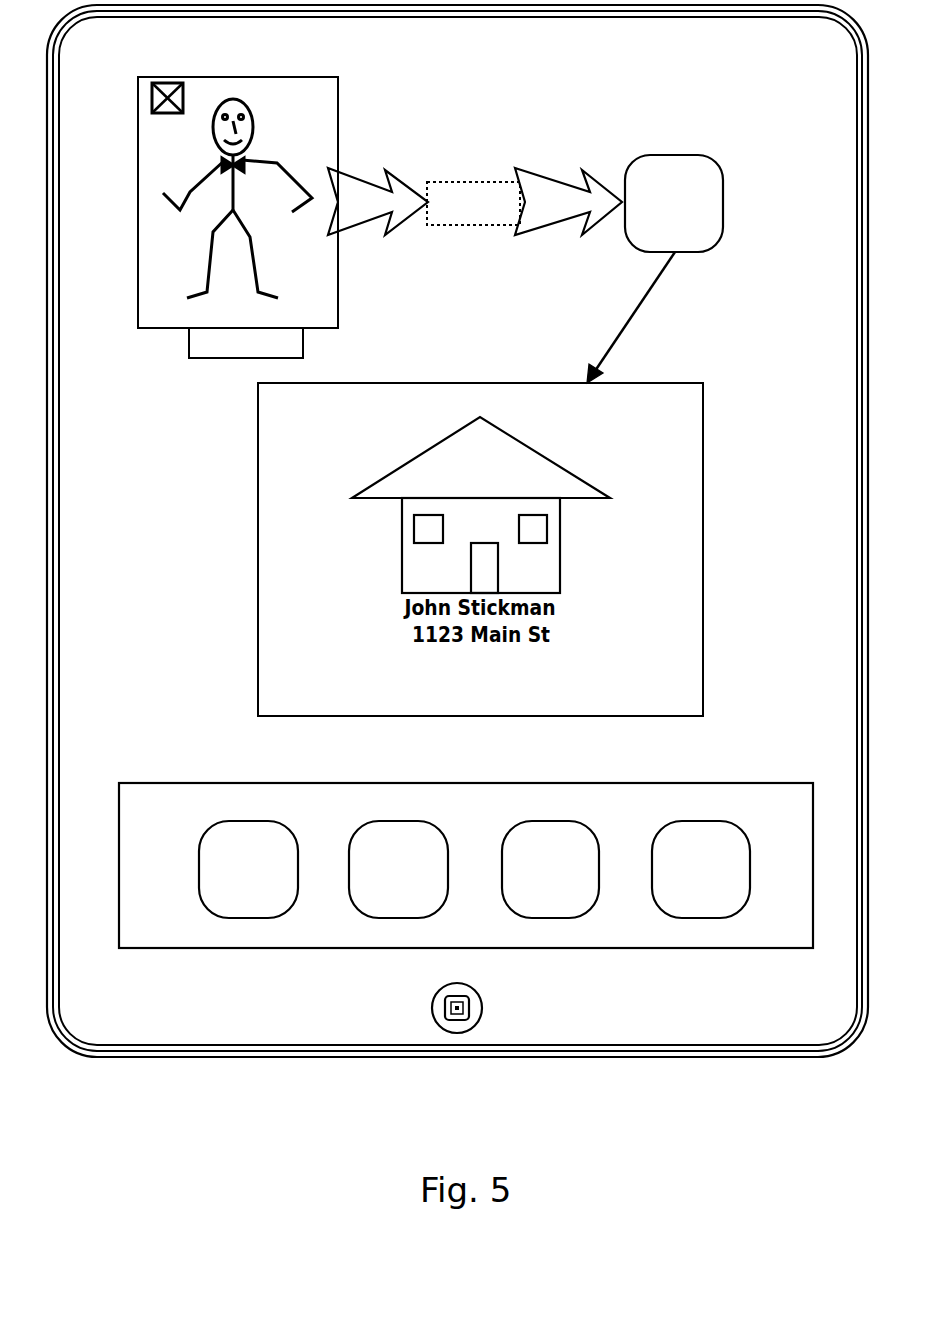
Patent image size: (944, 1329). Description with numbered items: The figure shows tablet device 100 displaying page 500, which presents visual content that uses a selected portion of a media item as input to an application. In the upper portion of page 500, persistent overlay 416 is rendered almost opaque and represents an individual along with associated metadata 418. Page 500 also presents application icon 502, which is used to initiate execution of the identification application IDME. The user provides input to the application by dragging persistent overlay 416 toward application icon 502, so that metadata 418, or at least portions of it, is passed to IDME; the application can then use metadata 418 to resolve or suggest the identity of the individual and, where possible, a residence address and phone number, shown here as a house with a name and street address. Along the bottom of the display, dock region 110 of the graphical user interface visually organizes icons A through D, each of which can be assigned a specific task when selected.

The tablet device 100 is at (620, 1110).
The page 500 is at (458, 531).
The persistent overlay 416 is at (238, 202).
The metadata 418 is at (354, 270).
The application icon 502 is at (673, 155).
The dock region 110 is at (466, 865).